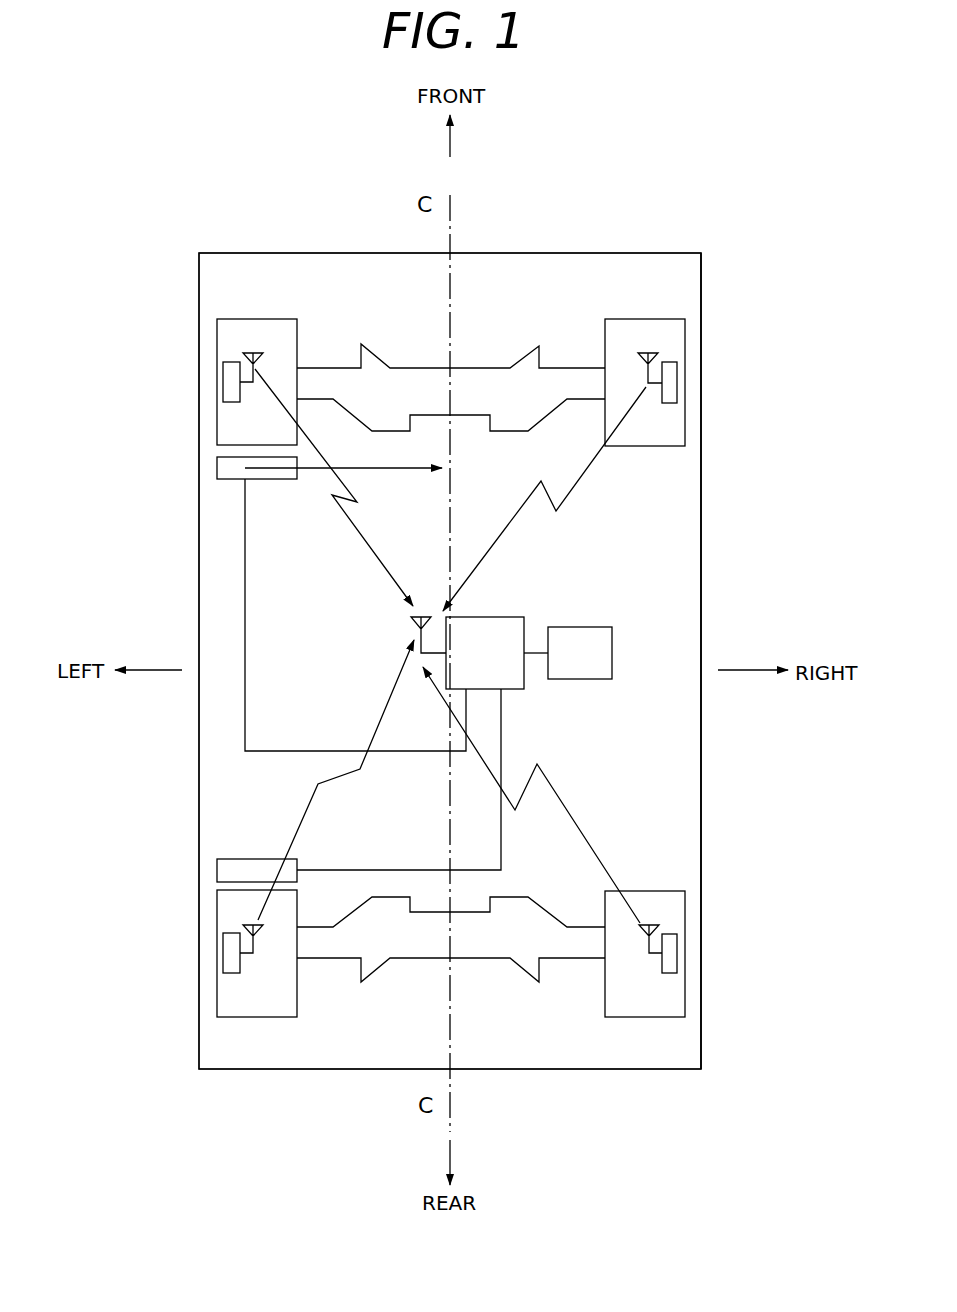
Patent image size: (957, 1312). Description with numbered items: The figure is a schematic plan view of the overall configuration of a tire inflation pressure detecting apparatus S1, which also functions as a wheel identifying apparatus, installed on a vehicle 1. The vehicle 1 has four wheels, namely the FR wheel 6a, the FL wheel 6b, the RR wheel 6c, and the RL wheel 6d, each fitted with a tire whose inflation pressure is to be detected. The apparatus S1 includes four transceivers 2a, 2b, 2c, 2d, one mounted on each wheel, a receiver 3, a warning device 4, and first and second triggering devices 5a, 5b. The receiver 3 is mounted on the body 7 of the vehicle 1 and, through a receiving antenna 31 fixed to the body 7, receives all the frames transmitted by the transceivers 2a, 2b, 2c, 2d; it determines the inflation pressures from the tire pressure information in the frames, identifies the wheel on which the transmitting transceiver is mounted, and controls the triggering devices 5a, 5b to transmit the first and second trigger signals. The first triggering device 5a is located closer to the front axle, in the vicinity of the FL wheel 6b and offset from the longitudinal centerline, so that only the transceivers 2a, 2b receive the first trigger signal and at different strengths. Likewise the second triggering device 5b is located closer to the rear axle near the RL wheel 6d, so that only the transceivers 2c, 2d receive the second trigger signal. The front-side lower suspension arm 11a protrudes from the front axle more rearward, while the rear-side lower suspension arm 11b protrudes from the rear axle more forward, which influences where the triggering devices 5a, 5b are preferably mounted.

The tire inflation pressure detecting apparatus S1 is at (276, 207).
The vehicle 1 is at (605, 252).
The body 7 is at (701, 585).
The front-side lower suspension arm 11a is at (489, 368).
The rear-side lower suspension arm 11b is at (523, 972).
The FR wheel 6a is at (632, 319).
The FL wheel 6b is at (278, 319).
The RR wheel 6c is at (642, 1017).
The RL wheel 6d is at (262, 1017).
The transceiver 2a is at (672, 362).
The transceiver 2b is at (223, 362).
The transceiver 2c is at (670, 973).
The transceiver 2d is at (232, 975).
The first triggering device 5a is at (217, 468).
The second triggering device 5b is at (217, 870).
The receiver 3 is at (507, 617).
The receiving antenna 31 is at (413, 628).
The warning device 4 is at (570, 679).